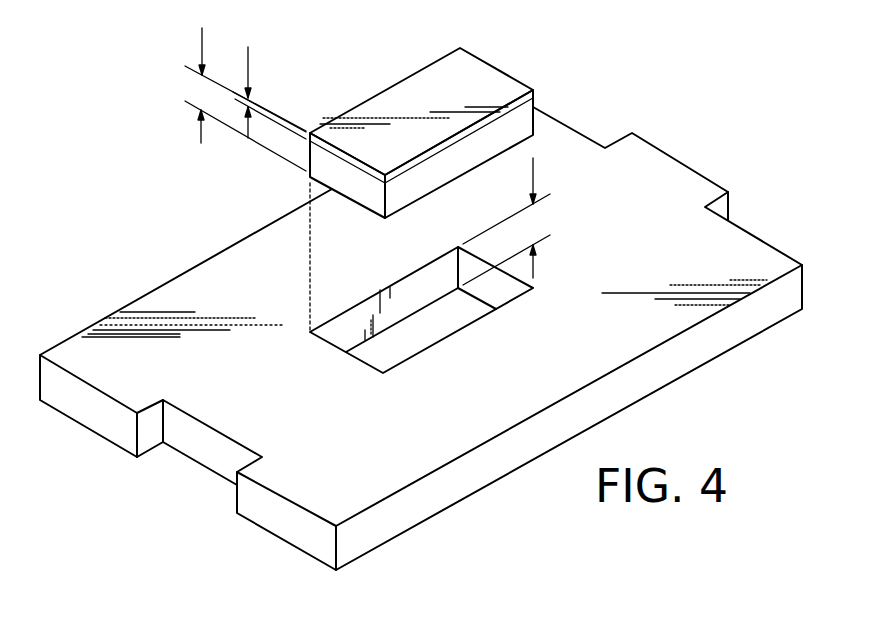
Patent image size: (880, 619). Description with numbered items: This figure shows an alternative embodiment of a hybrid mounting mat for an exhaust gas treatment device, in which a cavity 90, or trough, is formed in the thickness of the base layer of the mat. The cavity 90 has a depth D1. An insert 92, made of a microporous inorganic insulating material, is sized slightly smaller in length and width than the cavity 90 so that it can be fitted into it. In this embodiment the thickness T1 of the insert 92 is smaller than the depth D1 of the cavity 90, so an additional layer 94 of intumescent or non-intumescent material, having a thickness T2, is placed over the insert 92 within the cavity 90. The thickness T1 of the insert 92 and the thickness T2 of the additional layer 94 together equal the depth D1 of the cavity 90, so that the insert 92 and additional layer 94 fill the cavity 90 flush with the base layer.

The cavity 90 is at (445, 313).
The insert 92 is at (533, 122).
The additional layer 94 is at (483, 68).
The thickness of insert T1 is at (202, 28).
The thickness of additional layer T2 is at (248, 47).
The depth of cavity D1 is at (533, 158).